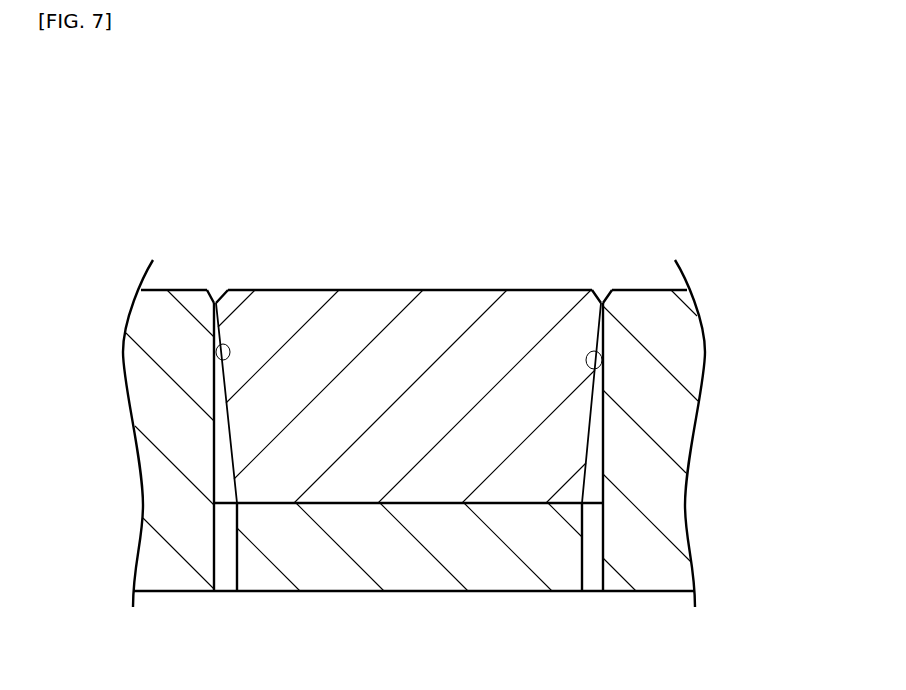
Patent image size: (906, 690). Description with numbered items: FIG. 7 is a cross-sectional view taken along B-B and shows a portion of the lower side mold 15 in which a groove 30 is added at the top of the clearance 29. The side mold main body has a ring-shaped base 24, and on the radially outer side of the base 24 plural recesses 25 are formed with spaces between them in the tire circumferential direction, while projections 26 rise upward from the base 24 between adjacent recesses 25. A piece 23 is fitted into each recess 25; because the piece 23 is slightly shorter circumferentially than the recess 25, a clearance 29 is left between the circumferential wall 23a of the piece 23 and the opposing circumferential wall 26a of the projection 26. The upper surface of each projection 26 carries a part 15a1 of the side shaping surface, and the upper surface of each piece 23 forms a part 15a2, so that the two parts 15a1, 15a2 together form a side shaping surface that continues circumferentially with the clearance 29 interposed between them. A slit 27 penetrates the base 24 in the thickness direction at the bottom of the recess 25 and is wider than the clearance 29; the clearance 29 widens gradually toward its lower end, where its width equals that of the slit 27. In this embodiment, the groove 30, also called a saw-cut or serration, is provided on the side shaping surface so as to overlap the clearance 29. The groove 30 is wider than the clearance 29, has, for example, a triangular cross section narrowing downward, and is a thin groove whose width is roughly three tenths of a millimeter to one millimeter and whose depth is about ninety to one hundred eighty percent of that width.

The lower side mold 15 is at (412, 76).
The part of side shaping surface 15a1 is at (178, 290).
The part of side shaping surface 15a2 is at (322, 290).
The piece 23 is at (430, 318).
The circumferential wall of piece 23a is at (214, 313).
The base 24 is at (430, 556).
The recess 25 is at (336, 497).
The projection 26 is at (165, 486).
The circumferential wall of projection 26a is at (218, 366).
The slit 27 is at (214, 546).
The clearance 29 is at (216, 300).
The groove 30 is at (207, 289).